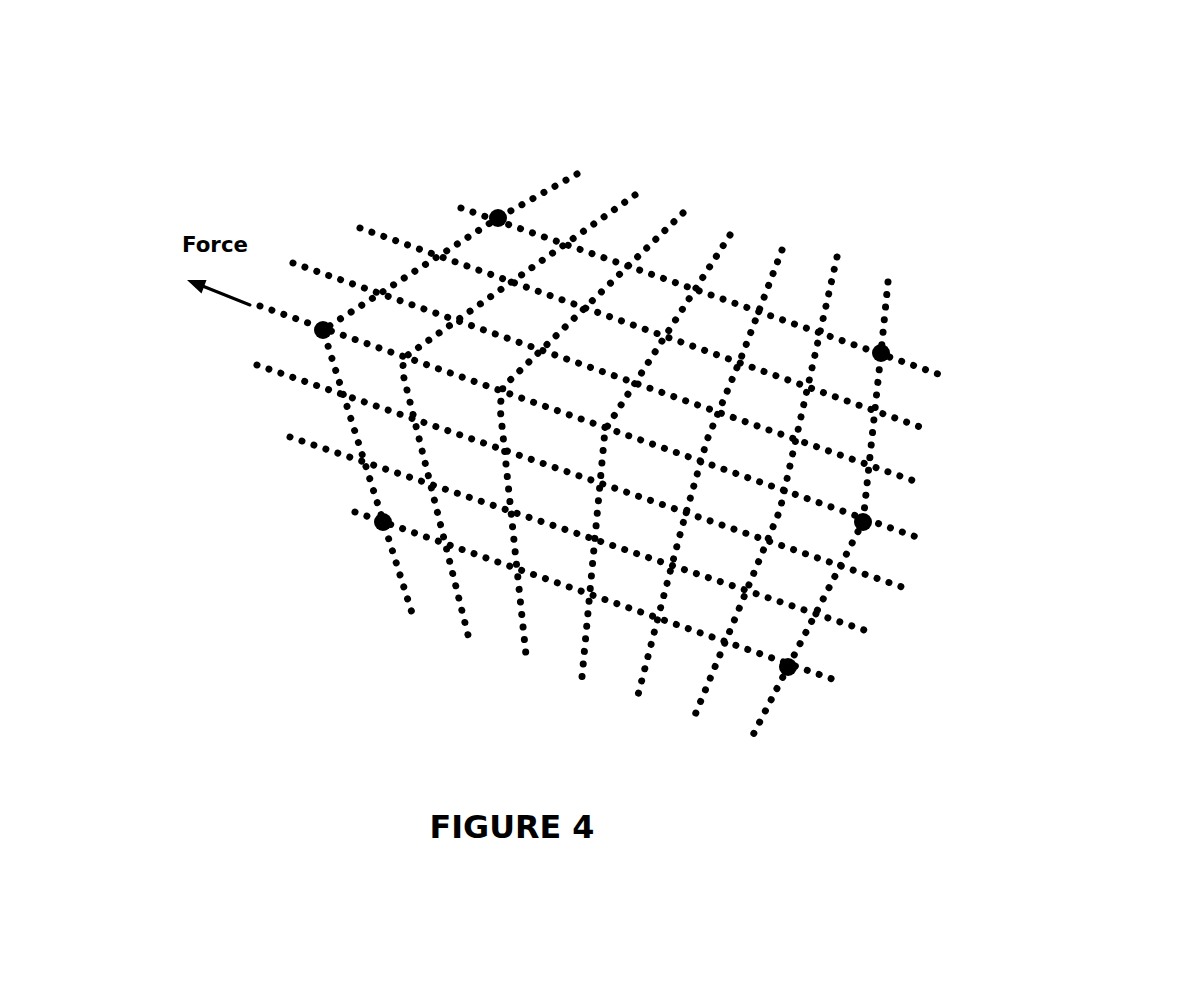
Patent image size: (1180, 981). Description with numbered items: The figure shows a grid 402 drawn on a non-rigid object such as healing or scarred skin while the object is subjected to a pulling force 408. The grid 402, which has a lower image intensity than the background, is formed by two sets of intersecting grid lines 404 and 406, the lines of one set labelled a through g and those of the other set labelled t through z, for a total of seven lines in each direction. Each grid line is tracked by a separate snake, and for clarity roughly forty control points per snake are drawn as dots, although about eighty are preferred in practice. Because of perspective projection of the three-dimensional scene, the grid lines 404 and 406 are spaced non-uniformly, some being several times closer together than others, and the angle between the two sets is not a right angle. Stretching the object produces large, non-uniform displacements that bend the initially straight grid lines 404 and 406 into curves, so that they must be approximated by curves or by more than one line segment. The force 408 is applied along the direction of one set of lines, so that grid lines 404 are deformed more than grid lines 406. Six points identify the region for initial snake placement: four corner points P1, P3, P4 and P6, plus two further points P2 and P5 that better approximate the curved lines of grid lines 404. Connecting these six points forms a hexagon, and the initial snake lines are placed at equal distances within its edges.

The grid 402 is at (342, 88).
The set of intersecting grid lines 404 is at (580, 84).
The set of intersecting grid lines 406 is at (1055, 313).
The force 408 is at (218, 297).
The corner point P1 is at (383, 522).
The point P2 is at (322, 330).
The corner point P3 is at (498, 218).
The corner point P4 is at (788, 667).
The point P5 is at (863, 522).
The corner point P6 is at (881, 353).